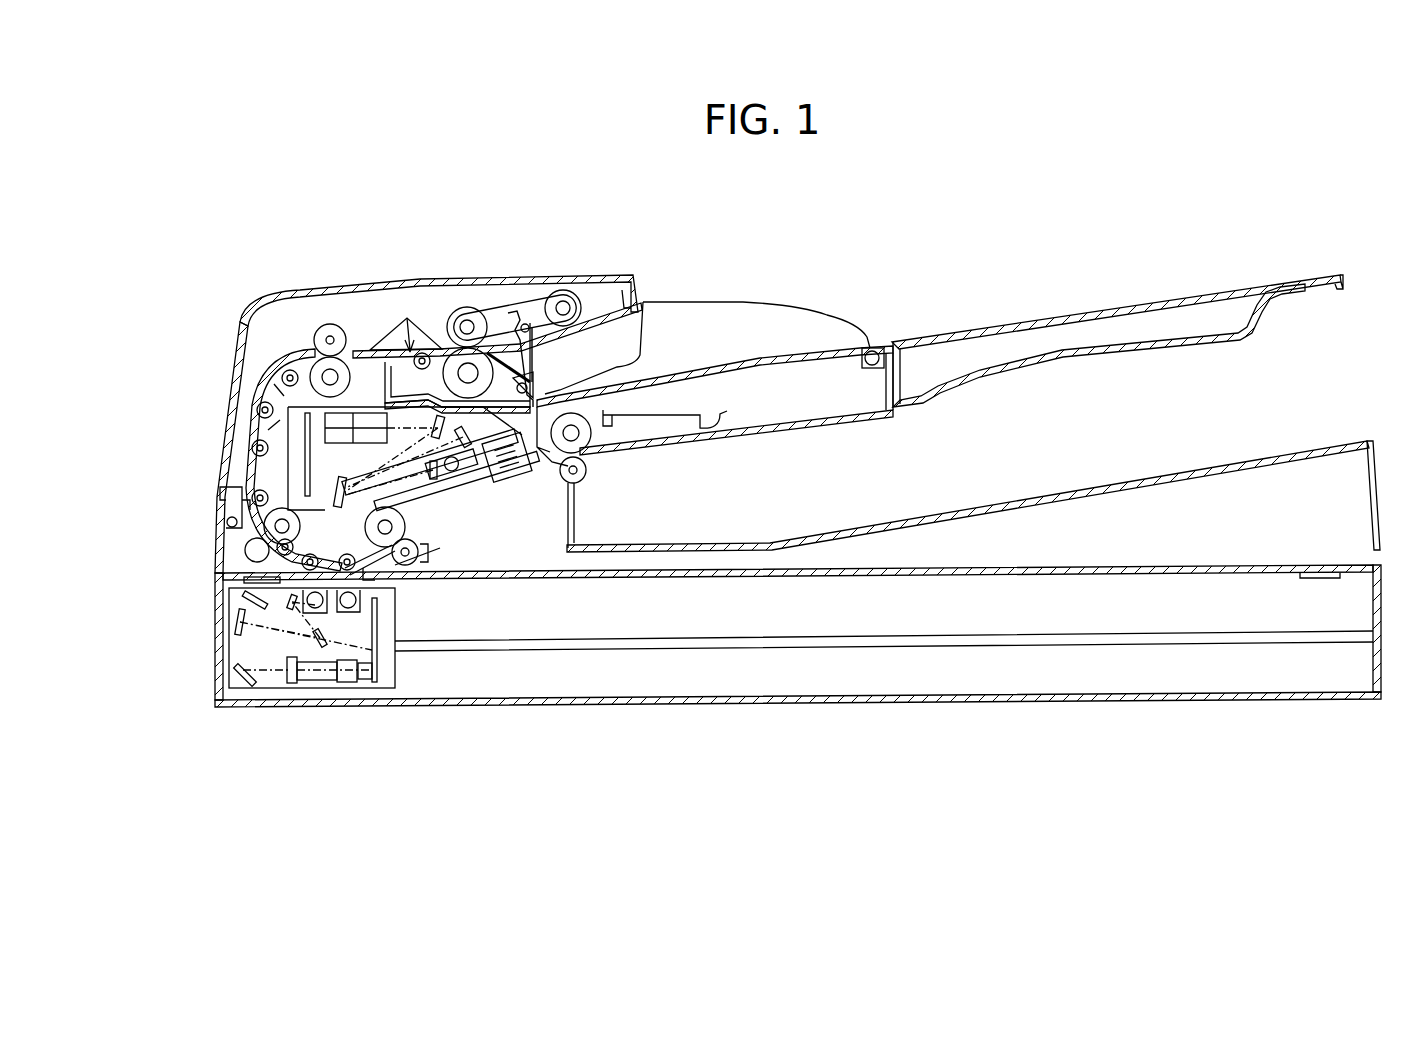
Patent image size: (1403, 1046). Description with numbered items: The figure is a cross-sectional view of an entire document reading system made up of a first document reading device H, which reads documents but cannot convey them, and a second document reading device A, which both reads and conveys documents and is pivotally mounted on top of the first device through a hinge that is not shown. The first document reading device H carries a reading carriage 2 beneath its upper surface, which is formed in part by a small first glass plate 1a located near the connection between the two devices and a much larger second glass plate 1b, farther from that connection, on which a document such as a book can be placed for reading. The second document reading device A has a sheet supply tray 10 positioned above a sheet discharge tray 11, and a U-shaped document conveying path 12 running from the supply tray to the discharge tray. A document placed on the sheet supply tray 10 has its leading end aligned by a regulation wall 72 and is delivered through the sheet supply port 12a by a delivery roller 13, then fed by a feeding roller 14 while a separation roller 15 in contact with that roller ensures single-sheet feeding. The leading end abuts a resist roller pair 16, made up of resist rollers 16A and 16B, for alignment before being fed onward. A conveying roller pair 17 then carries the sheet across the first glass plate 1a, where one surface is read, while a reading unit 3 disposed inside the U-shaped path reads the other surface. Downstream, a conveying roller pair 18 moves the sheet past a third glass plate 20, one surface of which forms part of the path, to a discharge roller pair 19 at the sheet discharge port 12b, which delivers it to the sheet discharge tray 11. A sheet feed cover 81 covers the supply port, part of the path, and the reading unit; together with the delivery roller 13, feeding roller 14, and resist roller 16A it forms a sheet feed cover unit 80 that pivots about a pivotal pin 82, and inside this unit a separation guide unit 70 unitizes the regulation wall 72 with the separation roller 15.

The second document reading device A is at (1166, 231).
The first document reading device H is at (1166, 748).
The first glass plate 1a is at (298, 578).
The second glass plate 1b is at (817, 576).
The reading carriage 2 is at (228, 620).
The reading unit 3 is at (283, 436).
The sheet supply tray 10 is at (821, 347).
The sheet discharge tray 11 is at (995, 505).
The document conveying path 12 is at (273, 380).
The sheet supply port 12a is at (572, 357).
The sheet discharge port 12b is at (602, 460).
The delivery roller 13 is at (563, 300).
The feeding roller 14 is at (465, 316).
The separation roller 15 is at (458, 360).
The resist roller pair 16 is at (255, 186).
The resist roller 16A is at (327, 326).
The resist roller 16B is at (312, 372).
The conveying roller pair 17 is at (253, 552).
The conveying roller pair 18 is at (405, 566).
The discharge roller pair 19 is at (575, 485).
The third glass plate 20 is at (453, 515).
The separation guide unit 70 is at (406, 326).
The regulation wall 72 is at (620, 367).
The sheet feed cover unit 80 is at (243, 306).
The sheet feed cover 81 is at (262, 298).
The pivotal pin 82 is at (227, 520).